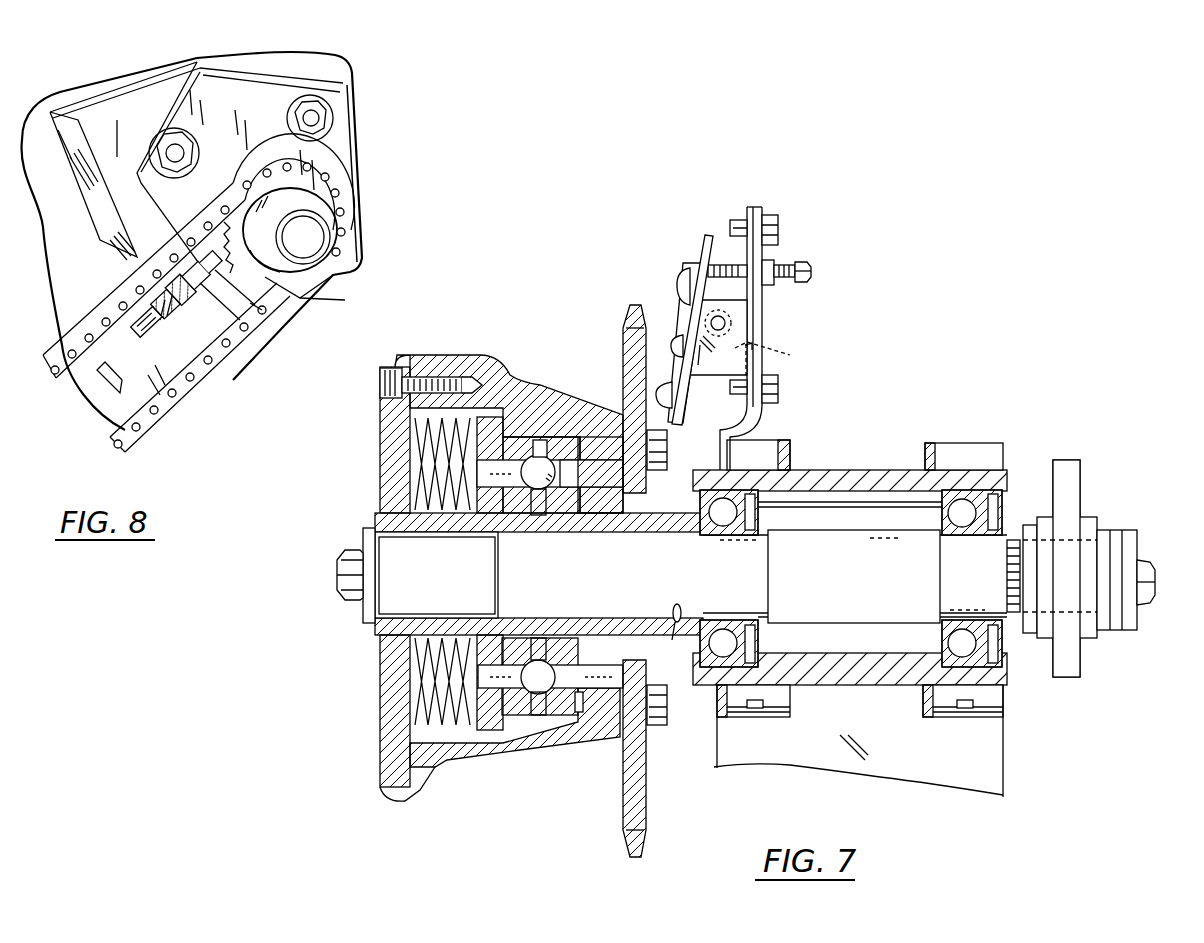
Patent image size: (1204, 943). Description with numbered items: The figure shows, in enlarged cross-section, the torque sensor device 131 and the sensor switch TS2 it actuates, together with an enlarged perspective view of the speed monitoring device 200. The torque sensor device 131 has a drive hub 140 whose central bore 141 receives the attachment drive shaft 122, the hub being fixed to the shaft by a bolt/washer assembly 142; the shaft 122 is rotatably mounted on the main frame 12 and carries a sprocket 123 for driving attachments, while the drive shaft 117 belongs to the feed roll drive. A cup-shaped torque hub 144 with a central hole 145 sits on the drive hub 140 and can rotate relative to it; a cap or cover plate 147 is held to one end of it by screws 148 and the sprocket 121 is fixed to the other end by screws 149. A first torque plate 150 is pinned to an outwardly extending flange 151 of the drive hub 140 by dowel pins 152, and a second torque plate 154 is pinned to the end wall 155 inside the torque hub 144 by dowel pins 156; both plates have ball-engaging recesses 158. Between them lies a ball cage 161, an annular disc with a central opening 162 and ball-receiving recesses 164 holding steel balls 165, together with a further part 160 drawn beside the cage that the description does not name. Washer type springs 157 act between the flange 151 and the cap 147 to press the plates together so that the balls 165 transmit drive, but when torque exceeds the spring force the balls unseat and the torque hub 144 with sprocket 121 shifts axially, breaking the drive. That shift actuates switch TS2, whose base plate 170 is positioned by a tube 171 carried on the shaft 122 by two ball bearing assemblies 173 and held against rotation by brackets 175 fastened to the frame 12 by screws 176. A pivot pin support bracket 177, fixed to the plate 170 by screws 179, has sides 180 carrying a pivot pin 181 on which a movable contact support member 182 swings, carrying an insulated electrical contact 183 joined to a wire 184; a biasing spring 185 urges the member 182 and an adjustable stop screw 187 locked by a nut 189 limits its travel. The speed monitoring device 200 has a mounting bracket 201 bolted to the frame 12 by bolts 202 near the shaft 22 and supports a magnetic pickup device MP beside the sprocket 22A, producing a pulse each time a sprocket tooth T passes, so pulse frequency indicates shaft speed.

In FIG. 8, the main frame 12 is at (127, 107).
In FIG. 7, the main frame 12 is at (1000, 781).
In FIG. 8, the bolts 202 is at (320, 118).
In FIG. 8, the shaft 22 is at (312, 245).
In FIG. 8, the sprocket 22A is at (292, 283).
In FIG. 8, the sprocket tooth T is at (270, 286).
In FIG. 8, the magnetic pickup device MP is at (255, 302).
In FIG. 8, the mounting bracket 201 is at (215, 335).
In FIG. 8, the speed monitoring device 200 is at (178, 325).
In FIG. 7, the torque sensor device 131 is at (385, 808).
In FIG. 7, the drive hub 140 is at (378, 628).
In FIG. 7, the bolt/washer assembly 142 is at (337, 574).
In FIG. 7, the torque hub 144 is at (440, 355).
In FIG. 7, the central hole 145 is at (642, 520).
In FIG. 7, the cap or cover plate 147 is at (380, 440).
In FIG. 7, the screws 148 is at (380, 388).
In FIG. 7, the screws 149 is at (662, 725).
In FIG. 7, the first torque plate 150 is at (490, 733).
In FIG. 7, the outwardly extending flange 151 is at (462, 768).
In FIG. 7, the dowel pins 152 is at (510, 462).
In FIG. 7, the second torque plate 154 is at (548, 716).
In FIG. 7, the end wall 155 is at (585, 712).
In FIG. 7, the dowel pins 156 is at (598, 460).
In FIG. 7, the washer type springs 157 is at (420, 487).
In FIG. 7, the ball-engaging recesses 158 is at (546, 514).
In FIG. 7, the shaft end 160 is at (584, 458).
In FIG. 7, the ball cage 161 is at (550, 458).
In FIG. 7, the central opening 162 is at (548, 660).
In FIG. 7, the ball-receiving recesses 164 is at (536, 640).
In FIG. 7, the steel balls 165 is at (538, 450).
In FIG. 7, the base plate 170 is at (768, 414).
In FIG. 7, the tube 171 is at (866, 470).
In FIG. 7, the ball bearing assemblies 173 is at (738, 512).
In FIG. 7, the brackets 175 is at (790, 685).
In FIG. 7, the screws 176 is at (763, 704).
In FIG. 7, the pivot pin support bracket 177 is at (740, 309).
In FIG. 7, the screws 179 is at (780, 226).
In FIG. 7, the projections or sides 180 is at (720, 380).
In FIG. 7, the pivot pin 181 is at (727, 324).
In FIG. 7, the movable contact support member 182 is at (706, 240).
In FIG. 7, the electrical contact 183 is at (672, 332).
In FIG. 7, the wire 184 is at (697, 458).
In FIG. 7, the biasing spring 185 is at (783, 358).
In FIG. 7, the stop member or screw 187 is at (811, 270).
In FIG. 7, the nut 189 is at (778, 265).
In FIG. 7, the sensor switch TS2 is at (786, 341).
In FIG. 7, the attachment drive shaft 122 is at (746, 578).
In FIG. 7, the central bore 141 is at (674, 640).
In FIG. 7, the sprocket 121 is at (648, 818).
In FIG. 7, the sprocket 123 is at (1075, 470).
In FIG. 7, the drive shaft 117 is at (1075, 535).